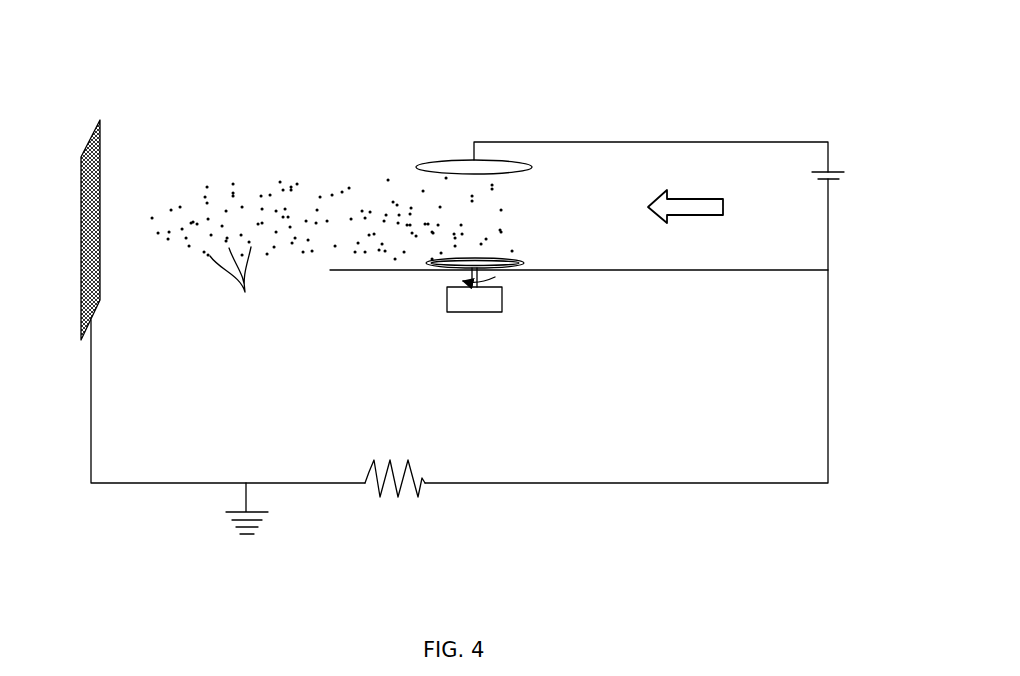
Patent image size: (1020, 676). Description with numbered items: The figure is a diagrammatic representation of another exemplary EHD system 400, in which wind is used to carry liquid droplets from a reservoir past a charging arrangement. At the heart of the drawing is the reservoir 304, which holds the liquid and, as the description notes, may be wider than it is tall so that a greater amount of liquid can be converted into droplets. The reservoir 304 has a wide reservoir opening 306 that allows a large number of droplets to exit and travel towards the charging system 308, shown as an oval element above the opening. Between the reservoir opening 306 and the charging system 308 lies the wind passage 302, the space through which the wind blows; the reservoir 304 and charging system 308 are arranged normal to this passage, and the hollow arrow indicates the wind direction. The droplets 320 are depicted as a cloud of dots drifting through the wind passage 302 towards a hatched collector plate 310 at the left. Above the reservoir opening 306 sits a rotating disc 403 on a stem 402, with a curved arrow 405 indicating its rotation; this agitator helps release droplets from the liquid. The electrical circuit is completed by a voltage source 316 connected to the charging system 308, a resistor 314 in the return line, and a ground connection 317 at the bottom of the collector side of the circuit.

The EHD system 400 is at (772, 70).
The wind passage 302 is at (503, 211).
The reservoir 304 is at (503, 308).
The reservoir opening 306 is at (503, 284).
The charging system 308 is at (444, 159).
The substrate/collector plate 310 is at (101, 133).
The resistor 314 is at (413, 470).
The voltage source 316 is at (823, 182).
The ground 317 is at (230, 512).
The particles 320 is at (239, 283).
The stem 402 is at (515, 268).
The disk/target 403 is at (500, 258).
The rotation arrow 405 is at (452, 278).